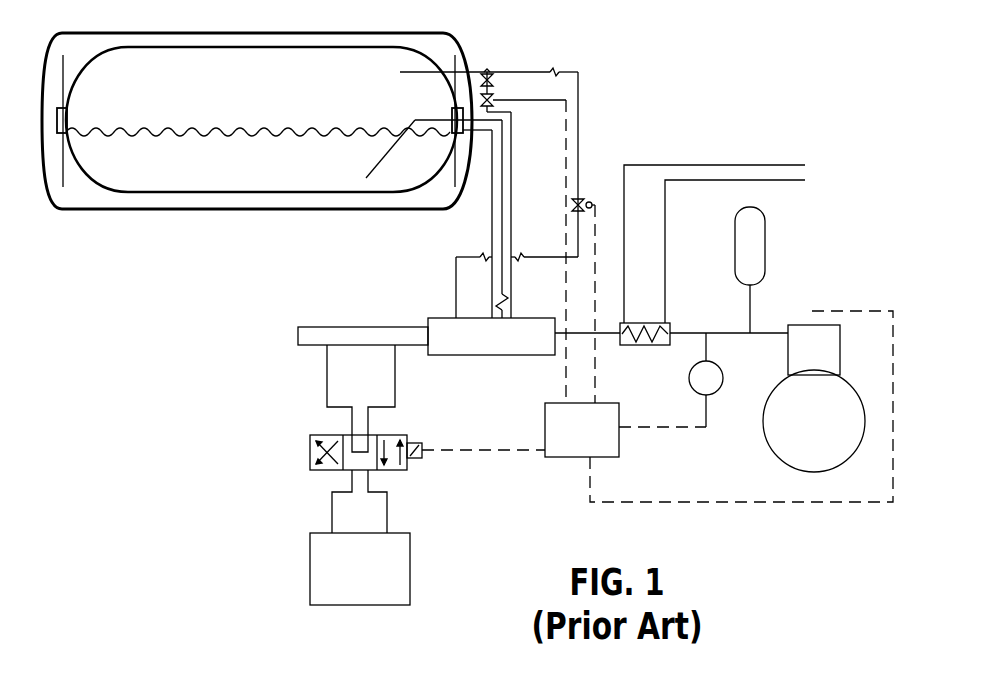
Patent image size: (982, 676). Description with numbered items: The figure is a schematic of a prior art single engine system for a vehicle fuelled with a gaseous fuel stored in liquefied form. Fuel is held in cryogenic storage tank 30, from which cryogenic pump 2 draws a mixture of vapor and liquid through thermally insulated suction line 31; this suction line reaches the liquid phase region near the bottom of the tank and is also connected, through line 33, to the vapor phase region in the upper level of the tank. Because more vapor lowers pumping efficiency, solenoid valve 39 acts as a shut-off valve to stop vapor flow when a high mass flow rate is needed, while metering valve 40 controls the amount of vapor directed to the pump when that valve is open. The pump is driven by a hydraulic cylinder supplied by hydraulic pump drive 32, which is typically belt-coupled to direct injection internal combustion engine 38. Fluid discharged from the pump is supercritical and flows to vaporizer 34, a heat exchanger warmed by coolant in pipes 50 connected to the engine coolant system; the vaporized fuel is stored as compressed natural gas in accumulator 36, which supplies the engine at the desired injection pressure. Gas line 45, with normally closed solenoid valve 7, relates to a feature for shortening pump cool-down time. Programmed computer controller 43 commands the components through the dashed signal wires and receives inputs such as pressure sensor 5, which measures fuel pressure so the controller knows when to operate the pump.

The cryogenic storage tank 30 is at (190, 170).
The thermally insulated suction line 31 is at (500, 192).
The line 33 is at (405, 72).
The metering valve 40 is at (495, 72).
The solenoid valve 39 is at (497, 99).
The solenoid valve 7 is at (580, 199).
The gas line 45 is at (456, 283).
The cryogenic pump 2 is at (467, 349).
The hydraulic pump drive 32 is at (344, 579).
The programmed computer controller 43 is at (560, 445).
The vaporizer 34 is at (650, 322).
The pipes 50 is at (742, 163).
The accumulator 36 is at (757, 243).
The pressure sensor 5 is at (696, 376).
The direct injection internal combustion engine 38 is at (800, 330).